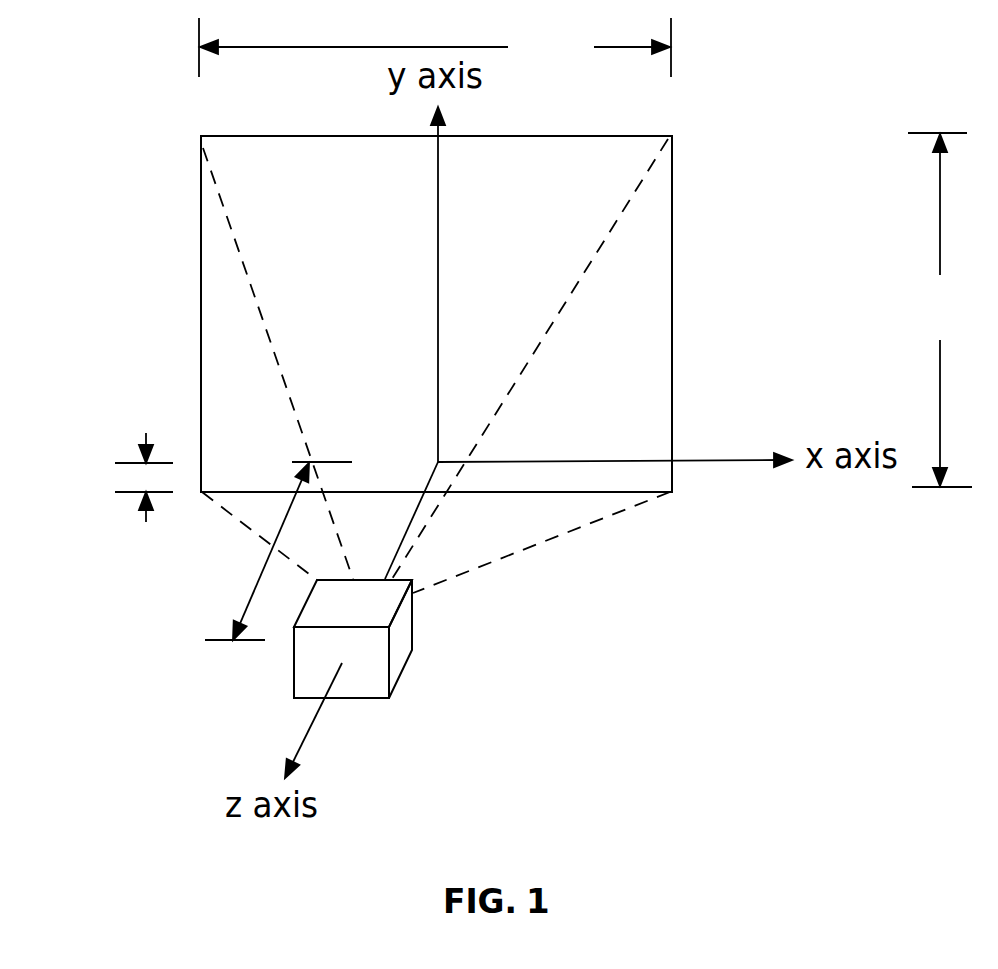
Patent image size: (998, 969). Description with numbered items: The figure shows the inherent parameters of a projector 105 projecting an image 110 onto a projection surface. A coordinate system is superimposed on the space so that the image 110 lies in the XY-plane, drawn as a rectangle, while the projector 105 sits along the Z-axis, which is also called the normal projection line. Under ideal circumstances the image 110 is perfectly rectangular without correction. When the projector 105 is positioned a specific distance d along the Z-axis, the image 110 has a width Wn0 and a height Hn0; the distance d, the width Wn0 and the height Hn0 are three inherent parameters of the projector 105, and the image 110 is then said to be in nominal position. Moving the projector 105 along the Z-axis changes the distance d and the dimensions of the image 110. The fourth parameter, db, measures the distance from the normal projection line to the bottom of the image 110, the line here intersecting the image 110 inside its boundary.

The image 110 is at (201, 222).
The projector 105 is at (413, 648).
The width Wn0 is at (435, 47).
The height Hn0 is at (941, 310).
The distance from the NPL to the bottom of the image db is at (120, 477).
The distance d is at (278, 551).